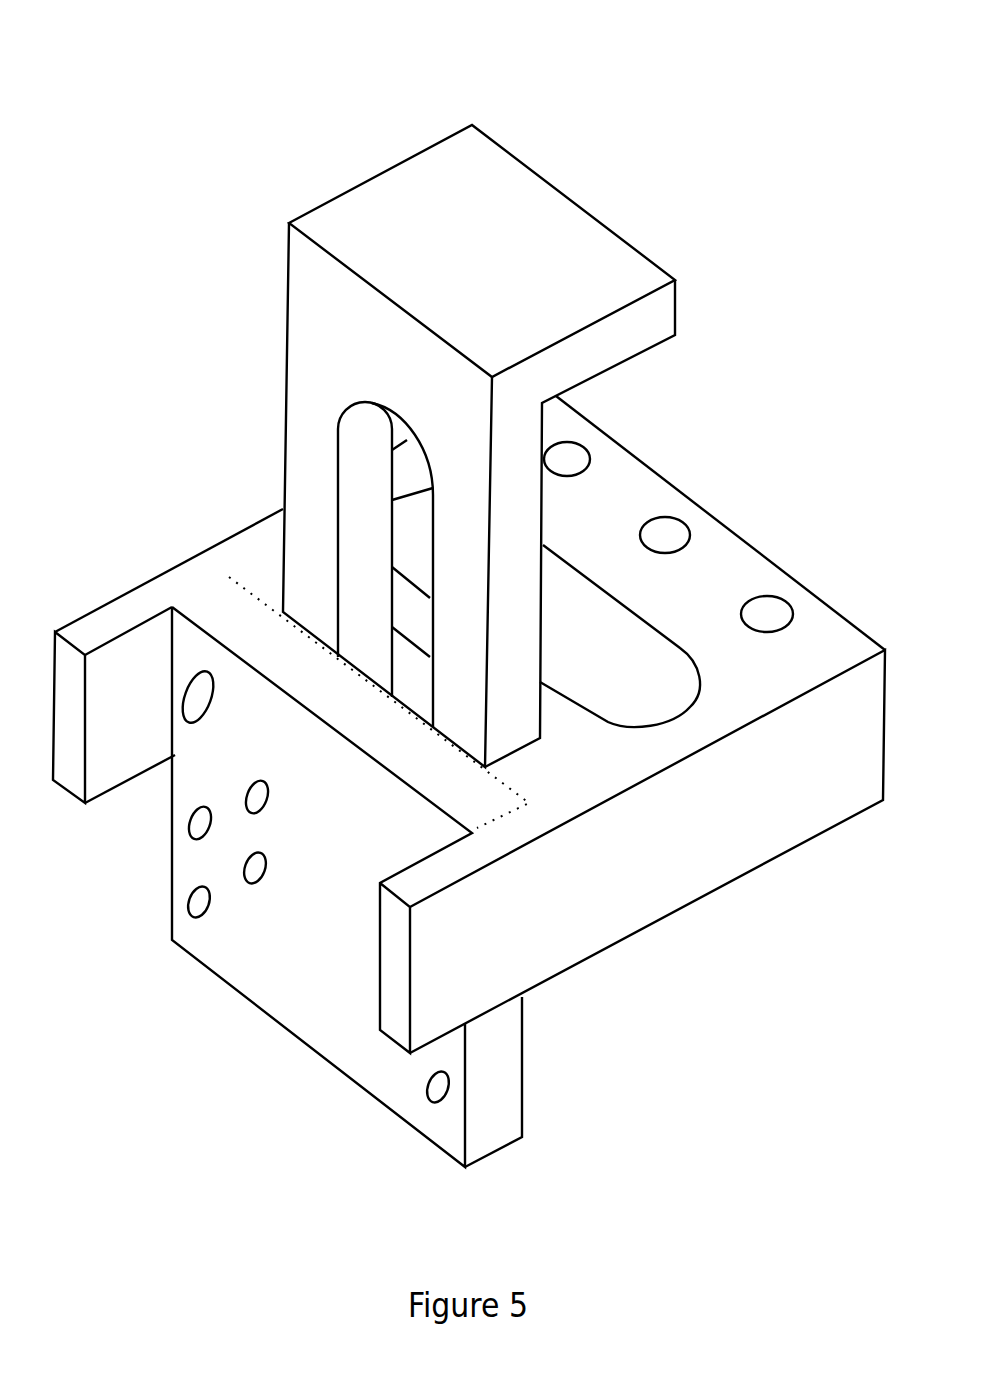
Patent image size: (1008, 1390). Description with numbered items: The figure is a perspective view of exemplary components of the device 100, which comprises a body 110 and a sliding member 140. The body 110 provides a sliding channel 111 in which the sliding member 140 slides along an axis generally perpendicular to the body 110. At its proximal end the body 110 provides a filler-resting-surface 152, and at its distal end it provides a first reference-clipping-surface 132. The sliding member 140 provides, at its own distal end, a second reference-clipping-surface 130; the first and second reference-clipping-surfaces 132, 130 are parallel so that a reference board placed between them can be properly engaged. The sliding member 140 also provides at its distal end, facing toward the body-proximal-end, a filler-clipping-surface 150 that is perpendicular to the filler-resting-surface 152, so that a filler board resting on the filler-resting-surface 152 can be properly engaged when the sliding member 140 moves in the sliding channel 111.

The device 100 is at (101, 176).
The body 110 is at (576, 787).
The sliding channel 111 is at (413, 680).
The second reference-clipping-surface 130 is at (615, 370).
The first reference-clipping-surface 132 is at (653, 595).
The sliding member 140 is at (440, 252).
The filler-clipping-surface 150 is at (317, 347).
The filler-resting-surface 152 is at (318, 683).